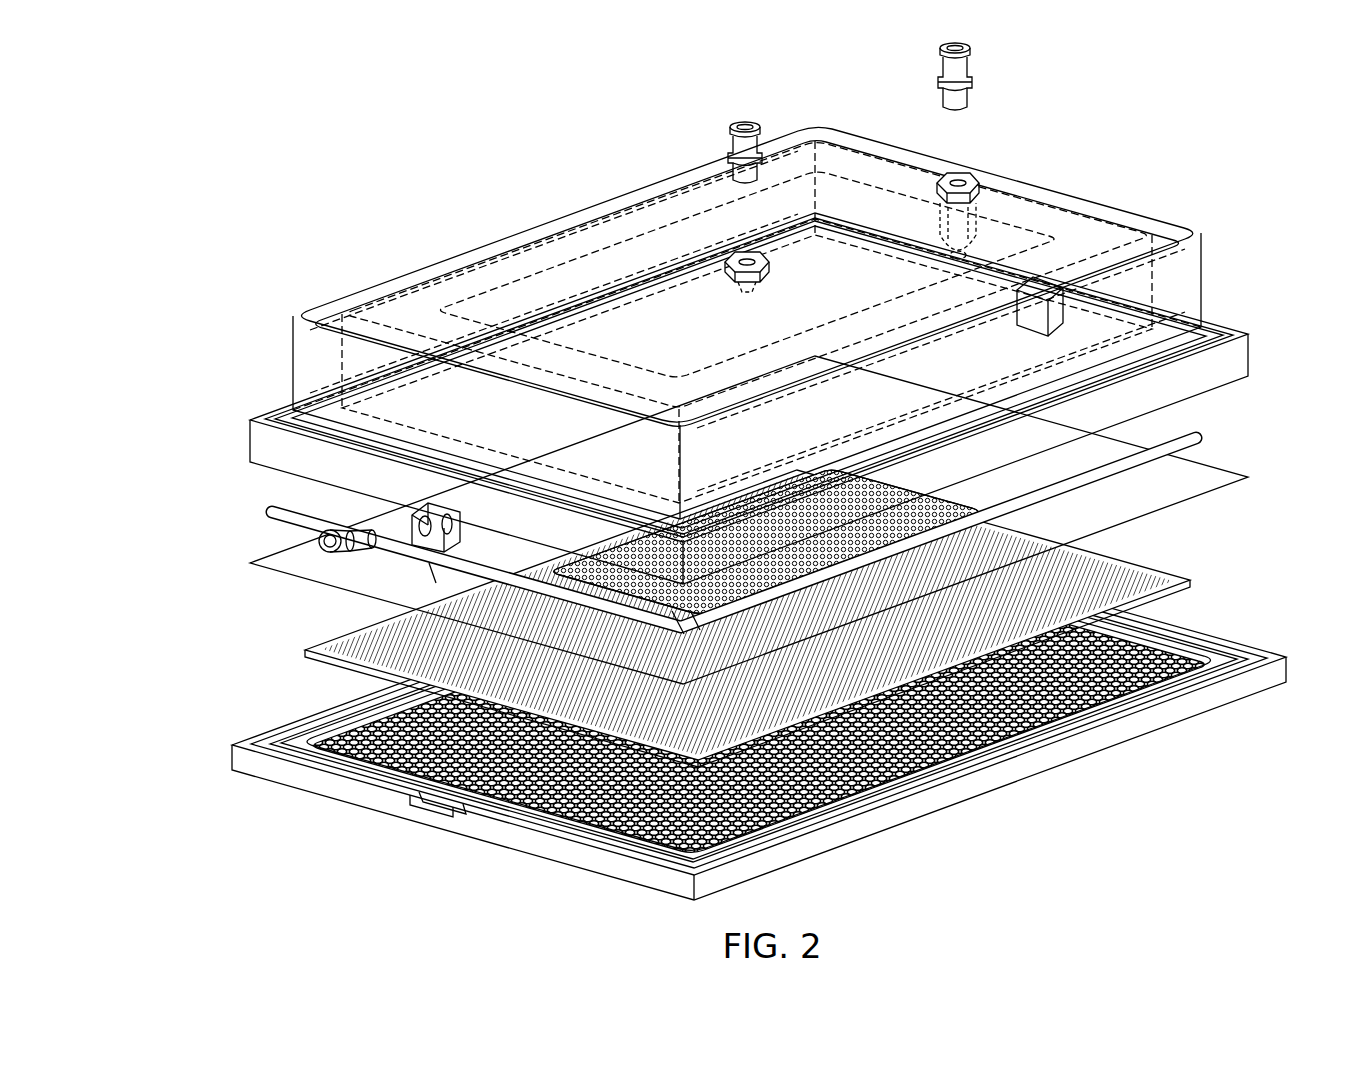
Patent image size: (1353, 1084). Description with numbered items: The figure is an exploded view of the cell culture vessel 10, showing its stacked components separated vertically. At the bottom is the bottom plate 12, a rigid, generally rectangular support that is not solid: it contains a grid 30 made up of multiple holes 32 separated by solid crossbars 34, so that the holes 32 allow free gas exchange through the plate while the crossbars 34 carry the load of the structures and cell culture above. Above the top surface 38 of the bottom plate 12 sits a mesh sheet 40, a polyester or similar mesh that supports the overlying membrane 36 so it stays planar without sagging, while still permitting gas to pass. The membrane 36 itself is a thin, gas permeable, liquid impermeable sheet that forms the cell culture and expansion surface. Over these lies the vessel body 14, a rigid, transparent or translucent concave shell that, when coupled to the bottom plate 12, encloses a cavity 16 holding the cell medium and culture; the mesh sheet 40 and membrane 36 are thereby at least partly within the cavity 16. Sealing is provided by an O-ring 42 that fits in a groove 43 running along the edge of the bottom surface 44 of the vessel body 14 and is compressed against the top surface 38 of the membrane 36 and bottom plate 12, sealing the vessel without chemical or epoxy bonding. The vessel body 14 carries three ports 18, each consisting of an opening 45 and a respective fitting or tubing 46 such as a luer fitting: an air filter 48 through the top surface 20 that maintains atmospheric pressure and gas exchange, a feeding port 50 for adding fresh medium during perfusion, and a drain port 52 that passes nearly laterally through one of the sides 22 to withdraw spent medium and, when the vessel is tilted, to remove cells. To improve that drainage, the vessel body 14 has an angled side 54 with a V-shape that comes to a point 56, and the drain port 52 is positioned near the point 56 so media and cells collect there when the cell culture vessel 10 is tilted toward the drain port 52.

The cell culture vessel 10 is at (1225, 136).
The bottom plate 12 is at (765, 714).
The vessel body 14 is at (292, 348).
The cavity 16 is at (1062, 250).
The ports 18 is at (730, 103).
The top surface 20 is at (713, 296).
The sides 22 is at (743, 398).
The grid 30 is at (1175, 652).
The holes 32 is at (1205, 660).
The crossbars 34 is at (1132, 640).
The membrane 36 is at (268, 560).
The top surface 38 is at (275, 740).
The mesh sheet 40 is at (318, 660).
The O-ring 42 is at (1205, 440).
The groove 43 is at (1240, 392).
The bottom surface 44 is at (1230, 408).
The opening 45 is at (735, 262).
The fitting or tubing 46 is at (633, 329).
The air filter 48 is at (766, 215).
The feeding port 50 is at (962, 150).
The drain port 52 is at (402, 545).
The angled side 54 is at (452, 552).
The point 56 is at (418, 537).